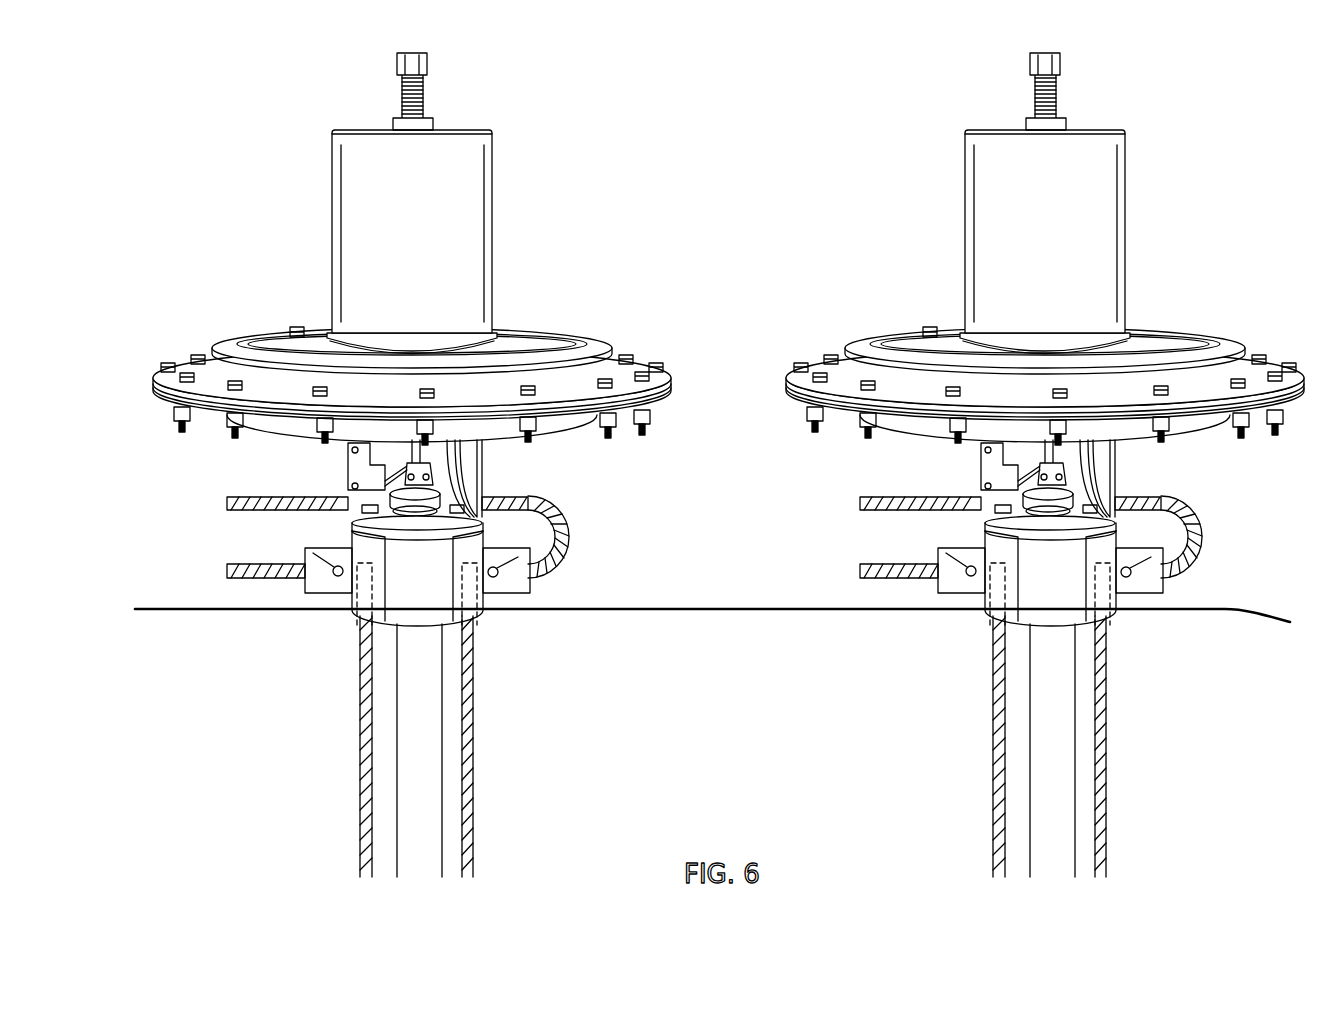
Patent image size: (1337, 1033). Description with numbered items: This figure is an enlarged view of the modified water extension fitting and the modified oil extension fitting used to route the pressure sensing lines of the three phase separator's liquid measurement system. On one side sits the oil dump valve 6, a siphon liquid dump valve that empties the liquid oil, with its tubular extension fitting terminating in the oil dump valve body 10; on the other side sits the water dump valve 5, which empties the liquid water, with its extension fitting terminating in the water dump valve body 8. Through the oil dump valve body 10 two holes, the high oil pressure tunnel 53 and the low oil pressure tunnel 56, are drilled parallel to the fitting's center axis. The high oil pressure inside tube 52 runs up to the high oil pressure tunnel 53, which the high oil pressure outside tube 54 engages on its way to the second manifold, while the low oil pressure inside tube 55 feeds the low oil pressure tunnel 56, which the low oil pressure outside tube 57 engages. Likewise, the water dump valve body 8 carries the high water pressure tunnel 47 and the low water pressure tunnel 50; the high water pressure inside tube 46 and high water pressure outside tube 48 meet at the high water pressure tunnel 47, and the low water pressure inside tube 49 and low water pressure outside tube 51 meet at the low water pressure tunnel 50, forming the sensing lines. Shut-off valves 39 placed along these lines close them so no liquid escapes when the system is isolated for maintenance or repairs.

The water dump valve 5 is at (1092, 150).
The oil dump valve 6 is at (461, 197).
The water dump valve body 8 is at (988, 537).
The oil dump valve body 10 is at (353, 537).
The shut-off valves 39 is at (305, 553).
The high water pressure inside tube 46 is at (998, 825).
The high water pressure tunnel 47 is at (993, 608).
The high water pressure outside tube 48 is at (888, 572).
The low water pressure inside tube 49 is at (1097, 745).
The low water pressure tunnel 50 is at (1110, 608).
The low water pressure outside tube 51 is at (1192, 537).
The high oil pressure inside tube 52 is at (363, 817).
The high oil pressure tunnel 53 is at (357, 610).
The high oil pressure outside tube 54 is at (253, 573).
The low oil pressure inside tube 55 is at (470, 780).
The low oil pressure tunnel 56 is at (478, 612).
The low oil pressure outside tube 57 is at (558, 538).